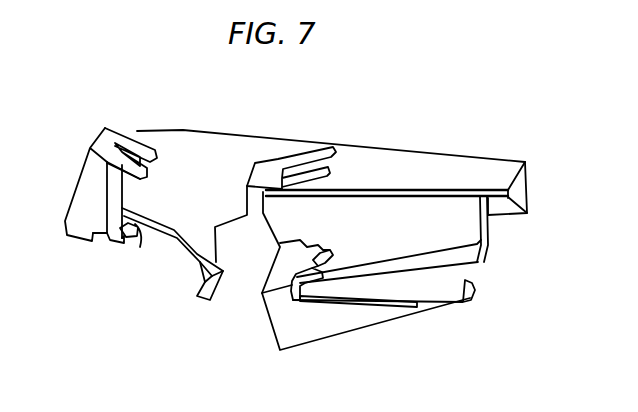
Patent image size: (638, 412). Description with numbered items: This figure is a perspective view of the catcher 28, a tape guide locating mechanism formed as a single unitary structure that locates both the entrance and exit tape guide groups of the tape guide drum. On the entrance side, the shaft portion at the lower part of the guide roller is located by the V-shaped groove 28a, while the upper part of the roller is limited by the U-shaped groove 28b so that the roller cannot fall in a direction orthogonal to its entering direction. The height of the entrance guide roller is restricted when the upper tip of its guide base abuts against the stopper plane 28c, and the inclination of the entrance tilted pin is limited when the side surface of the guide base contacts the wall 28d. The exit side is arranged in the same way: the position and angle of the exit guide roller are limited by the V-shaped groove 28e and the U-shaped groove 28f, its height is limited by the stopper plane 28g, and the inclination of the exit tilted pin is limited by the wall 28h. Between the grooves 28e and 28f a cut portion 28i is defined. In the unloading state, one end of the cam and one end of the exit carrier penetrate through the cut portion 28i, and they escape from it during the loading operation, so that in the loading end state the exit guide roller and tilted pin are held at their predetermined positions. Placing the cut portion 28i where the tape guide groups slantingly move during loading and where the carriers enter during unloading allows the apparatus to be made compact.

The catcher 28 is at (210, 172).
The V-shaped groove 28a is at (137, 237).
The U-shaped groove 28b is at (140, 150).
The stopper plane 28c is at (108, 242).
The wall 28d is at (193, 246).
The V-shaped groove 28e is at (328, 250).
The U-shaped groove 28f is at (310, 160).
The stopper plane 28g is at (300, 290).
The wall 28h is at (440, 283).
The cut portion 28i is at (255, 247).